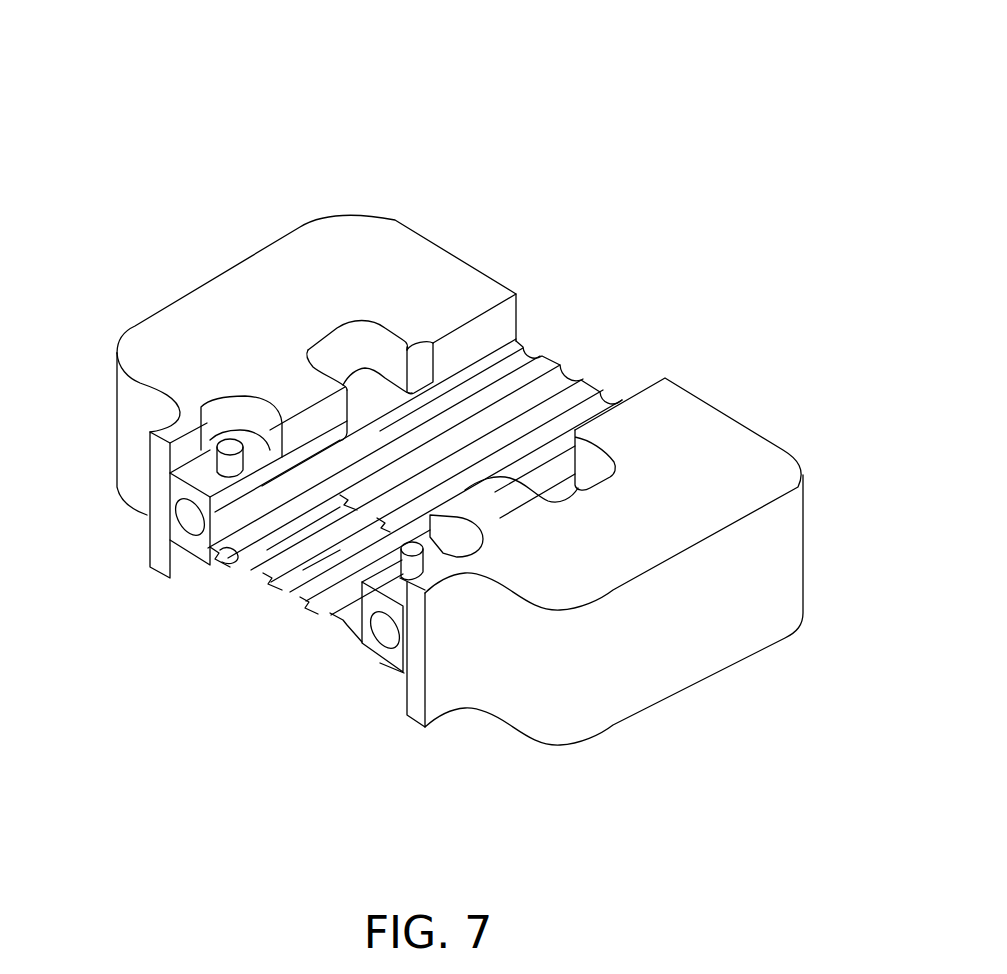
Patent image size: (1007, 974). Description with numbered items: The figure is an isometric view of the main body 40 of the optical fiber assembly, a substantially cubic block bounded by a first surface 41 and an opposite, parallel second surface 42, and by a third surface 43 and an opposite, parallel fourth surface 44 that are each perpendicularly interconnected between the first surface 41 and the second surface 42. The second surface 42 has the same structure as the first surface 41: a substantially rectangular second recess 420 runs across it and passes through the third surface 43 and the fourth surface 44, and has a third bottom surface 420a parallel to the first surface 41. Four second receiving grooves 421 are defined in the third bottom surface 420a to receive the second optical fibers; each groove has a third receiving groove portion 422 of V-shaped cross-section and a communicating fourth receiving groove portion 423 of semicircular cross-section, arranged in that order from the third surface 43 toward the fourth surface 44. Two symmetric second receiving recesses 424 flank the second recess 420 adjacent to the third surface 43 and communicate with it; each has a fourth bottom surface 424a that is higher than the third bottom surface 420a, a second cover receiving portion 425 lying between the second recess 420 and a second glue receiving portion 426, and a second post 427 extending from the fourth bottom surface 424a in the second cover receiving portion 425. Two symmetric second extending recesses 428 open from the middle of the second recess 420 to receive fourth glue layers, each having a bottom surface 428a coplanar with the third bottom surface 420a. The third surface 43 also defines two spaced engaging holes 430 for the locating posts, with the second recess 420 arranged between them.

The main body 40 is at (510, 88).
The first surface 41 is at (688, 694).
The second surface 42 is at (713, 430).
The third surface 43 is at (160, 455).
The fourth surface 44 is at (431, 240).
The second recess 420 is at (505, 330).
The third bottom surface 420a is at (579, 389).
The second receiving groove 421 is at (233, 683).
The third receiving groove portion 422 is at (318, 447).
The fourth receiving groove portion 423 is at (390, 518).
The second receiving recess 424 is at (133, 618).
The fourth bottom surface 424a is at (255, 452).
The second cover receiving portion 425 is at (212, 480).
The second glue receiving portion 426 is at (257, 452).
The second post 427 is at (228, 447).
The second extending recess 428 is at (330, 345).
The bottom surface 428a is at (375, 385).
The engaging hole 430 is at (390, 637).